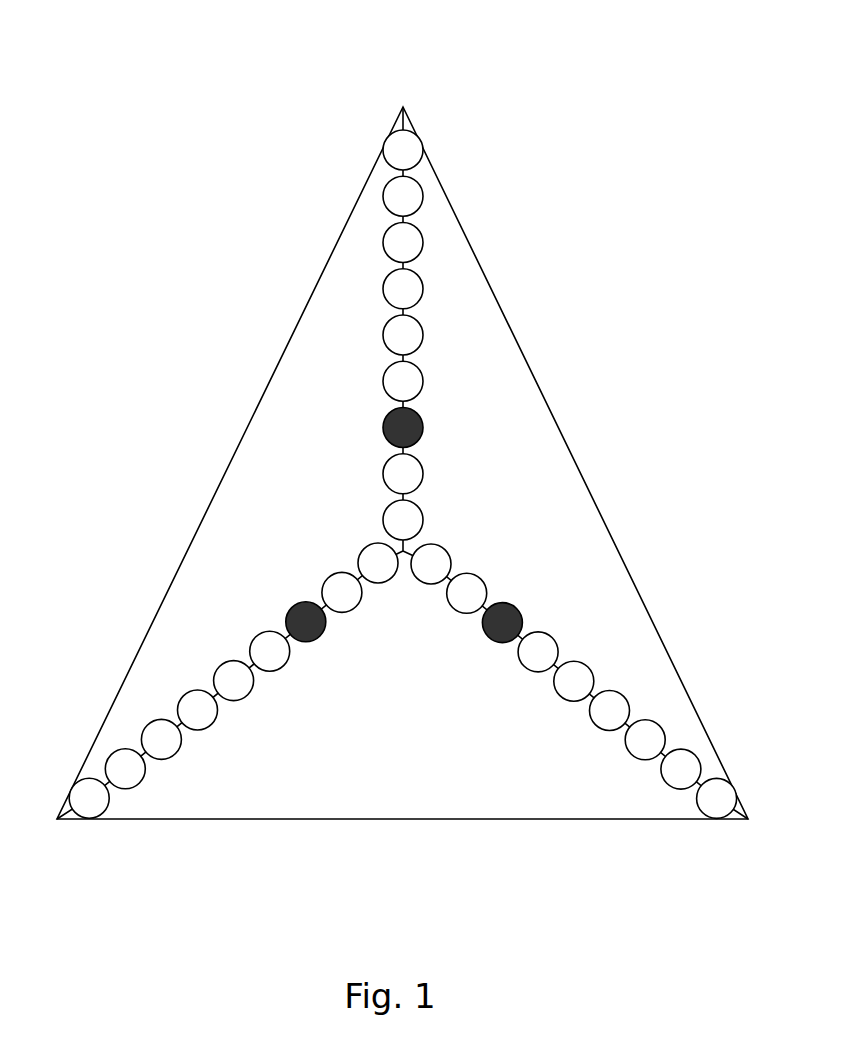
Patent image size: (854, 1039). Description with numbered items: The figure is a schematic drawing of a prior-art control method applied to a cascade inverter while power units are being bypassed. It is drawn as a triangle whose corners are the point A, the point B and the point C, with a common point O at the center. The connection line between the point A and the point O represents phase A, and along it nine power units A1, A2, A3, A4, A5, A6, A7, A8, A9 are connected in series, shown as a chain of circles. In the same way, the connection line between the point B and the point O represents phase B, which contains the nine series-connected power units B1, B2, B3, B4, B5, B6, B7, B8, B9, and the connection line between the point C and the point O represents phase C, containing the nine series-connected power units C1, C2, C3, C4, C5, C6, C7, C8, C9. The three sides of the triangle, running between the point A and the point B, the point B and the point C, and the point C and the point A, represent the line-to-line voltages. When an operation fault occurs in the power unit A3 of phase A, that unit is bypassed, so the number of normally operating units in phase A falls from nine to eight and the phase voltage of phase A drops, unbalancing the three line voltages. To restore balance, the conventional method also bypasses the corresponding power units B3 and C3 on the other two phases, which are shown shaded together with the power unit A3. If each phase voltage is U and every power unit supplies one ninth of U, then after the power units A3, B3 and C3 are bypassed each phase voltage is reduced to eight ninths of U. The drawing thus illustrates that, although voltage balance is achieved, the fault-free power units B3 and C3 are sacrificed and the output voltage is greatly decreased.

The point A is at (403, 84).
The point B is at (770, 819).
The point C is at (36, 818).
The point O is at (404, 585).
The power unit A1 is at (403, 520).
The power unit A2 is at (403, 474).
The power unit A3 is at (403, 428).
The power unit A4 is at (403, 381).
The power unit A5 is at (403, 335).
The power unit A6 is at (403, 289).
The power unit A7 is at (403, 243).
The power unit A8 is at (403, 196).
The power unit A9 is at (403, 150).
The power unit B1 is at (431, 564).
The power unit B2 is at (467, 593).
The power unit B3 is at (502, 623).
The power unit B4 is at (538, 652).
The power unit B5 is at (574, 681).
The power unit B6 is at (610, 711).
The power unit B7 is at (645, 740).
The power unit B8 is at (681, 769).
The power unit B9 is at (717, 798).
The power unit C1 is at (378, 563).
The power unit C2 is at (342, 592).
The power unit C3 is at (306, 622).
The power unit C4 is at (270, 651).
The power unit C5 is at (234, 681).
The power unit C6 is at (198, 710).
The power unit C7 is at (161, 739).
The power unit C8 is at (125, 769).
The power unit C9 is at (89, 798).